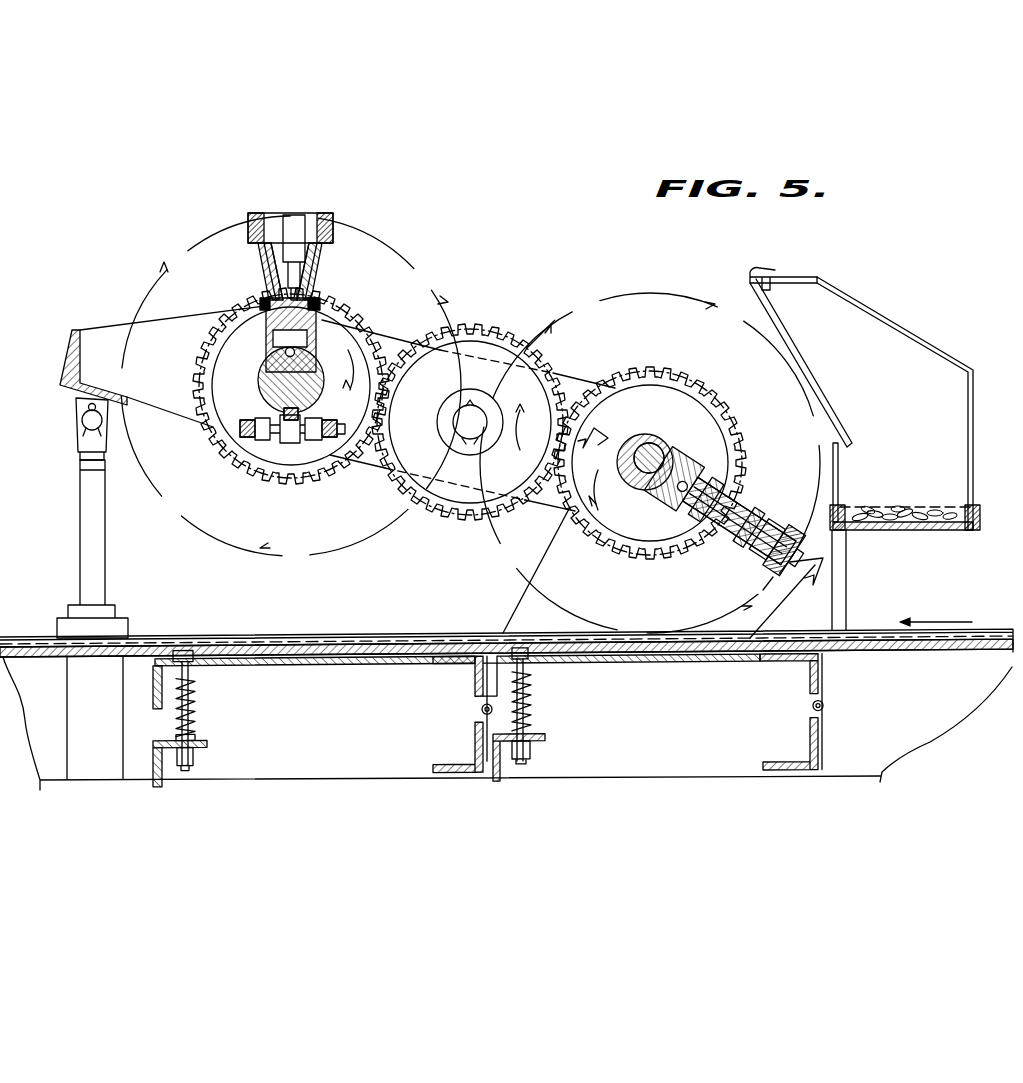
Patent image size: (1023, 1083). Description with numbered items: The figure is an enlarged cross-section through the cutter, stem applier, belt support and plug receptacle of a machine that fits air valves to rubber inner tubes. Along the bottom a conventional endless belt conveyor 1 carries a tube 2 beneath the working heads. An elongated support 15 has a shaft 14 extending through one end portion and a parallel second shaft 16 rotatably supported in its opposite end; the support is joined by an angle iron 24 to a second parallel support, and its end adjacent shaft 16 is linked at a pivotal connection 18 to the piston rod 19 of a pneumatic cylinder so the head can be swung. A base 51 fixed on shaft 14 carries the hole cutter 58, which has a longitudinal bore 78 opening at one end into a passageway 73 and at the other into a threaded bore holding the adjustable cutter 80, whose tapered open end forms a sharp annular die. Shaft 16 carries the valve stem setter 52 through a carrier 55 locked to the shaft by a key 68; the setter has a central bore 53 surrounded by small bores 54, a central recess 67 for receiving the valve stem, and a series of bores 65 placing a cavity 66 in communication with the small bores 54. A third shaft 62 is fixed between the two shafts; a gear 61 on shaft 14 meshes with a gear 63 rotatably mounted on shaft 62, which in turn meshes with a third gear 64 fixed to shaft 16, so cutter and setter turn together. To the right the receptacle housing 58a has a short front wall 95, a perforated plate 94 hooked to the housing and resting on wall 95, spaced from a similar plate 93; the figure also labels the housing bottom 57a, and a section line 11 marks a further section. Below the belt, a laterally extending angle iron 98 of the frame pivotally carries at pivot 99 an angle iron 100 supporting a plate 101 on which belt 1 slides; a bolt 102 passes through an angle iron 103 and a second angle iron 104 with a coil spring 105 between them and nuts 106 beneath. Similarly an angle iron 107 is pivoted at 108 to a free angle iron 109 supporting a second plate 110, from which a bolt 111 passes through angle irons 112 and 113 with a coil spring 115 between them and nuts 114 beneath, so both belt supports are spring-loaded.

The endless belt conveyor 1 is at (1000, 650).
The tube 2 is at (998, 631).
The section line 11 is at (663, 528).
The shaft 14 is at (642, 450).
The elongated support 15 is at (120, 293).
The second shaft 16 is at (317, 363).
The pivotal connection 18 is at (80, 424).
The piston rod 19 is at (90, 540).
The angle iron 24 is at (68, 364).
The base 51 is at (668, 436).
The valve stem setter 52 is at (328, 228).
The central bore 53 is at (294, 222).
The small bores 54 is at (266, 214).
The carrier 55 is at (272, 380).
The hopper bottom 57a is at (974, 528).
The hole cutter 58 is at (767, 513).
The hopper wall 58a is at (975, 370).
The gear 61 is at (662, 553).
The third shaft 62 is at (484, 410).
The gear 63 is at (480, 515).
The third gear 64 is at (207, 430).
The bores 65 is at (318, 264).
The cavity 66 is at (305, 340).
The central recess 67 is at (270, 258).
The key 68 is at (282, 398).
The passageway 73 is at (708, 463).
The longitudinal bore 78 is at (732, 487).
The cutter 80 is at (775, 531).
The perforated plate 93 is at (770, 331).
The perforated plate 94 is at (771, 272).
The short front wall 95 is at (838, 478).
The angle iron 98 is at (822, 740).
The pivotal connection 99 is at (824, 712).
The second angle iron 100 is at (822, 673).
The plate 101 is at (661, 660).
The bolt 102 is at (528, 690).
The angle iron 103 is at (538, 665).
The second angle iron 104 is at (540, 741).
The coil spring 105 is at (535, 719).
The nuts 106 is at (535, 760).
The angle iron 107 is at (474, 750).
The pivot 108 is at (480, 713).
The free angle iron 109 is at (474, 676).
The second plate 110 is at (310, 658).
The bolt 111 is at (196, 687).
The angle iron 112 is at (210, 670).
The angle iron 113 is at (203, 742).
The nuts 114 is at (195, 766).
The coil spring 115 is at (200, 717).